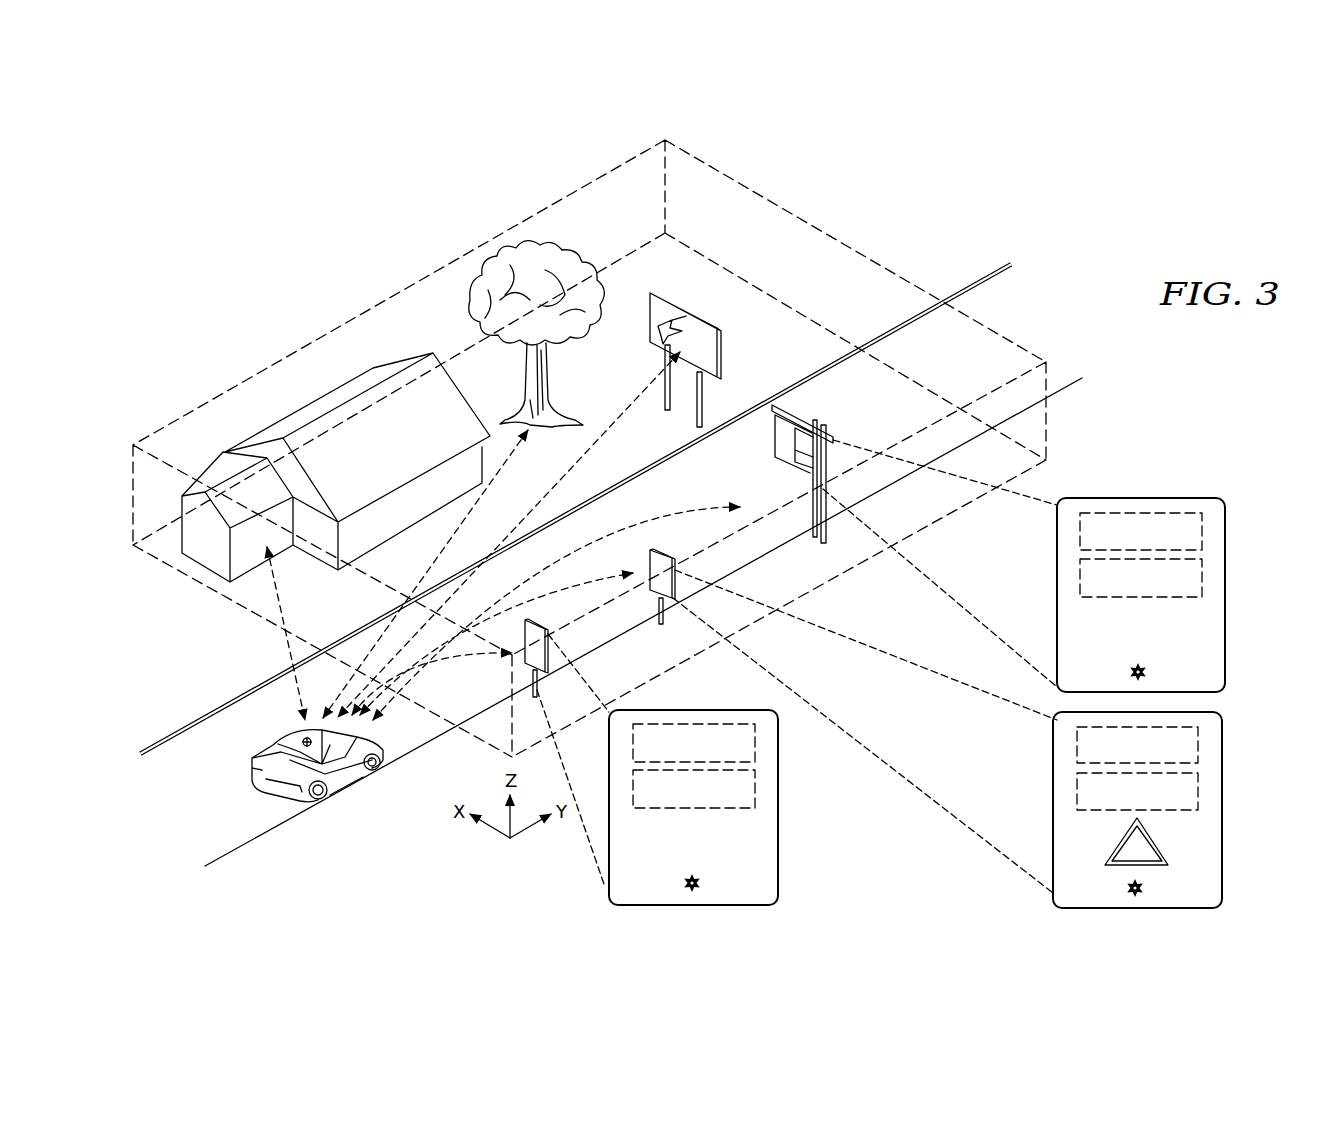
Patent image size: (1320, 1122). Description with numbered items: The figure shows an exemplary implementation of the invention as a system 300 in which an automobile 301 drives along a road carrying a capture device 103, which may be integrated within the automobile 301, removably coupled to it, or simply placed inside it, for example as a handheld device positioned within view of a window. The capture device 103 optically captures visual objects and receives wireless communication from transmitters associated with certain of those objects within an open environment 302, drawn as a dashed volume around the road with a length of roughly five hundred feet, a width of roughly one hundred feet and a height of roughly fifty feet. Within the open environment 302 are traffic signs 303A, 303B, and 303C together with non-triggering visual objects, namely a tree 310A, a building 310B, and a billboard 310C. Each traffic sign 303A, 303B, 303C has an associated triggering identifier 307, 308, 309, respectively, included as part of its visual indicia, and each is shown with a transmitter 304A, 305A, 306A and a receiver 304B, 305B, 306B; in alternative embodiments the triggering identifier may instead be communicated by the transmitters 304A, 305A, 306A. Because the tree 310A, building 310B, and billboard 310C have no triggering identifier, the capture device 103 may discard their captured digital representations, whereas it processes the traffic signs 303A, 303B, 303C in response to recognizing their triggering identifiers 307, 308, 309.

The system 300 is at (1070, 216).
The open environment 302 is at (830, 238).
The tree 310A is at (547, 373).
The building 310B is at (402, 452).
The billboard 310C is at (717, 353).
The capture device 103 is at (300, 739).
The automobile 301 is at (265, 792).
The traffic sign 303A is at (778, 843).
The traffic sign 303B is at (1215, 835).
The traffic sign 303C is at (1218, 638).
The transmitter 304A is at (755, 743).
The receiver 304B is at (755, 790).
The transmitter 305A is at (1198, 747).
The receiver 305B is at (1198, 792).
The transmitter 306A is at (1202, 532).
The receiver 306B is at (1202, 578).
The triggering identifier 307 is at (702, 885).
The triggering identifier 308 is at (1143, 888).
The triggering identifier 309 is at (1147, 673).